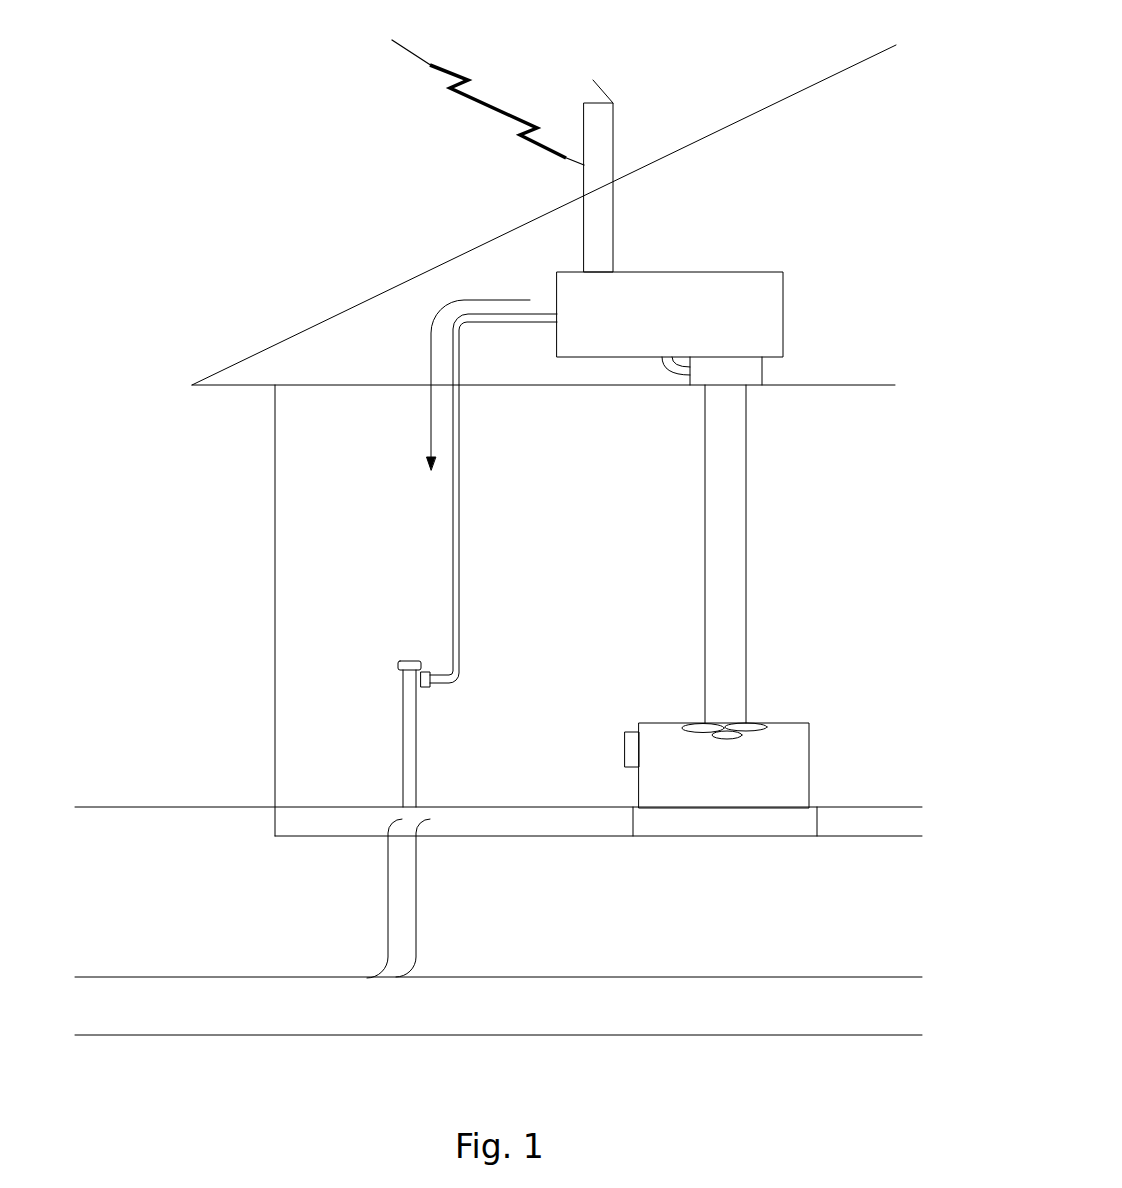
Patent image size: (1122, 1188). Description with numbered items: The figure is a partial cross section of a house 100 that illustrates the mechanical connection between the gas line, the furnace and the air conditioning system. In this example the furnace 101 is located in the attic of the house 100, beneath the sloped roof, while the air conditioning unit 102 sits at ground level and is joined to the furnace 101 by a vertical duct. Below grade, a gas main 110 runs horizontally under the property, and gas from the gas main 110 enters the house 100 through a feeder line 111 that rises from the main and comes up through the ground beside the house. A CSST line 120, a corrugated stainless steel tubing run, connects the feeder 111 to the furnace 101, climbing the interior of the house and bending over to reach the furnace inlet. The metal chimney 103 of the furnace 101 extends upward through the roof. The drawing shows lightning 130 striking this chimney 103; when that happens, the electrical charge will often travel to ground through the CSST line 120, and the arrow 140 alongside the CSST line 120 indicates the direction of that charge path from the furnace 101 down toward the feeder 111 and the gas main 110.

The house 100 is at (268, 293).
The furnace 101 is at (673, 261).
The air conditioning unit 102 is at (820, 737).
The chimney 103 is at (625, 129).
The gas main 110 is at (498, 1006).
The feeder line 111 is at (429, 923).
The CSST line 120 is at (469, 554).
The lightning 130 is at (442, 114).
The arrow 140 is at (463, 385).